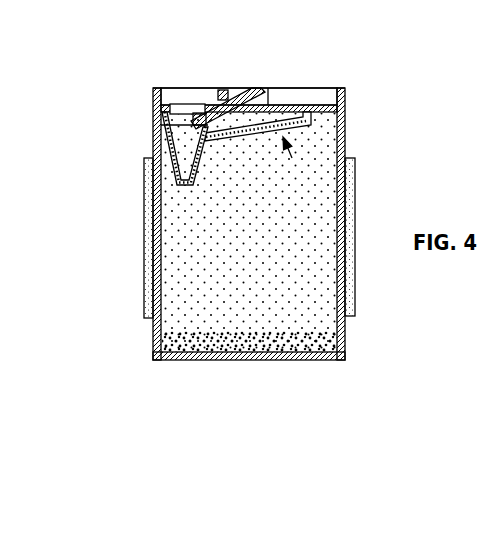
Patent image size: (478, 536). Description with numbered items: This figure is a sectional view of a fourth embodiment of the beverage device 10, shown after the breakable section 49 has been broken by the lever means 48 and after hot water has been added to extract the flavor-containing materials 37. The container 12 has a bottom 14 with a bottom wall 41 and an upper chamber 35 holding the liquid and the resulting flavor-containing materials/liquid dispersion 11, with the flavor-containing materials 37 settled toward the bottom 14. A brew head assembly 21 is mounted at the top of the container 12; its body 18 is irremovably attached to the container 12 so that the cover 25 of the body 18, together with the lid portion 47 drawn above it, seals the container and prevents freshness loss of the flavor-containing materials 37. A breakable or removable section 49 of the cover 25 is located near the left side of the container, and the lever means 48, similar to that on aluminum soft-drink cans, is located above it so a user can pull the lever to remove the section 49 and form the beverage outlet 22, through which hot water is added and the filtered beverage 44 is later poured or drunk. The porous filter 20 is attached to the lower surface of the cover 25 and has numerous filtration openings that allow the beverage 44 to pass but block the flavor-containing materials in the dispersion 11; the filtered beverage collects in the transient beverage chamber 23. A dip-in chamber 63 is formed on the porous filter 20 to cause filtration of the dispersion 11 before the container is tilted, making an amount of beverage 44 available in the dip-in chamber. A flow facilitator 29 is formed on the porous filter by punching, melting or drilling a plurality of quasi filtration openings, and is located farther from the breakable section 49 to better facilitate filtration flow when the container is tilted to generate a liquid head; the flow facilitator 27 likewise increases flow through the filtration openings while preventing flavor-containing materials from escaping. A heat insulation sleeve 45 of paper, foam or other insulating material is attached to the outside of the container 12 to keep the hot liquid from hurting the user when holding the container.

The beverage device 10 is at (360, 55).
The flavor-containing materials/liquid dispersion 11 is at (180, 249).
The container 12 is at (355, 365).
The bottom 14 is at (330, 121).
The body 18 is at (347, 101).
The porous filter 20 is at (153, 153).
The brew head assembly 21 is at (136, 80).
The beverage outlet 22 is at (178, 106).
The transient beverage chamber 23 is at (160, 127).
The cover 25 is at (297, 104).
The flow facilitator 27 is at (294, 161).
The flow facilitator 29 is at (292, 129).
The upper chamber 35 is at (310, 285).
The flavor-containing materials 37 is at (312, 338).
The bottom wall 41 is at (206, 362).
The beverage 44 is at (177, 183).
The sleeve 45 is at (355, 228).
The lid 47 is at (282, 92).
The lever means 48 is at (236, 97).
The breakable section 49 is at (197, 107).
The dip-in chamber 63 is at (168, 170).